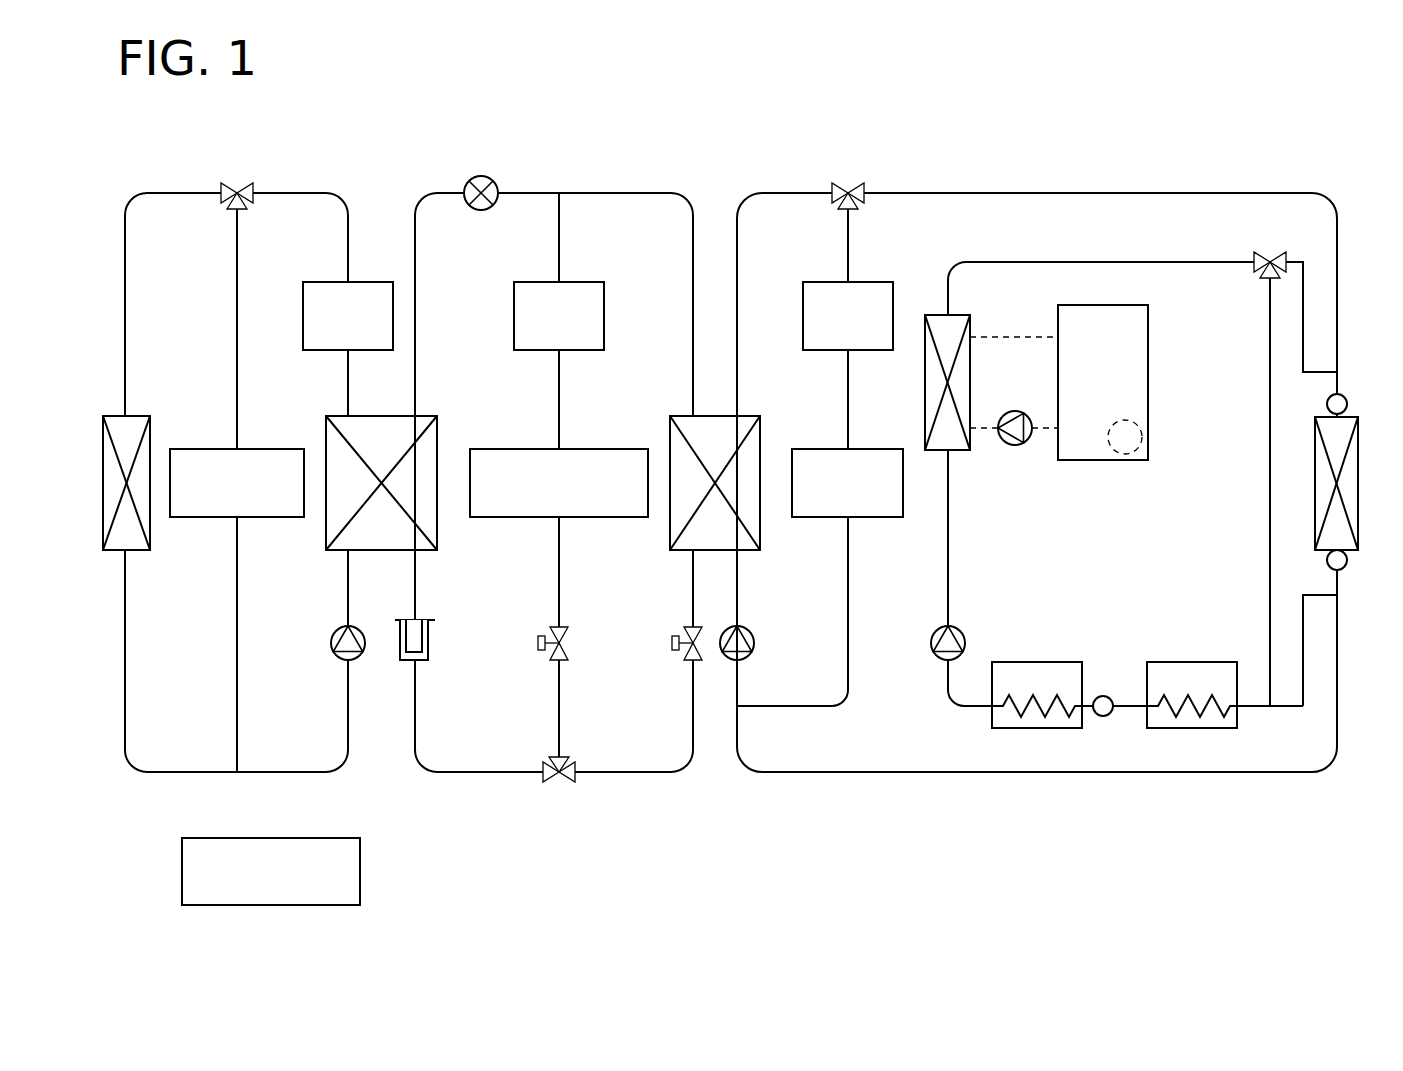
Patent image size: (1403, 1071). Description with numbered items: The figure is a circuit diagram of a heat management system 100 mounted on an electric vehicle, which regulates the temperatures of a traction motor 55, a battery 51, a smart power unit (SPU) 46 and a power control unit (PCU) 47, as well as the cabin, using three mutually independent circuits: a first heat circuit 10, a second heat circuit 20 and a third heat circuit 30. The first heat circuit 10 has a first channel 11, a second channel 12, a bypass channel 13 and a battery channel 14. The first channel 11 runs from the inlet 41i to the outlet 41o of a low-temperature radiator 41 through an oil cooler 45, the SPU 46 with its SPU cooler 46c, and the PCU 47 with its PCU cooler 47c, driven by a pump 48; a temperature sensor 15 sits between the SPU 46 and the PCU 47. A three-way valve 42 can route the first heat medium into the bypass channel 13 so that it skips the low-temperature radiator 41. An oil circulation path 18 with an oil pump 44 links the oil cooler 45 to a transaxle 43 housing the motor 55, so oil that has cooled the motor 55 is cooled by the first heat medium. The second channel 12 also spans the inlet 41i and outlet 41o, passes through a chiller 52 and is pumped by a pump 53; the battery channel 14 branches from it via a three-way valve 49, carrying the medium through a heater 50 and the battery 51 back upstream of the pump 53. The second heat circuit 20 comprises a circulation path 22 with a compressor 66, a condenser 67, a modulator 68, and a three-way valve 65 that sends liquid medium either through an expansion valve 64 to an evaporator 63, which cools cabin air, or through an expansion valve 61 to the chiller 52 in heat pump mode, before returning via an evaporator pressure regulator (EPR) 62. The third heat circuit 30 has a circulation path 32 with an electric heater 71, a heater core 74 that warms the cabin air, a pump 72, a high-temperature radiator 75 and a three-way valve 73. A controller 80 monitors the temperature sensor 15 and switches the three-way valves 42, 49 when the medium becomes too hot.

The heat management system 100 is at (158, 165).
The first heat circuit 10 is at (1114, 175).
The first channel 11 is at (946, 563).
The second channel 12 is at (952, 190).
The bypass channel 13 is at (1268, 416).
The battery channel 14 is at (852, 398).
The temperature sensor 15 is at (1103, 718).
The oil circulation path 18 is at (1003, 335).
The second heat circuit 20 is at (584, 182).
The circulation path 22 is at (701, 238).
The third heat circuit 30 is at (284, 182).
The circulation path 32 is at (353, 238).
The low-temperature radiator 41 is at (1312, 472).
The inlet 41i is at (1345, 395).
The outlet 41o is at (1345, 572).
The three-way valve 42 is at (1266, 252).
The transaxle 43 is at (1103, 463).
The oil pump 44 is at (1017, 448).
The oil cooler 45 is at (935, 312).
The smart power unit (SPU) 46 is at (1208, 708).
The SPU cooler 46c is at (1188, 710).
The power control unit (PCU) 47 is at (1040, 708).
The PCU cooler 47c is at (1030, 710).
The pump 48 is at (930, 645).
The three-way valve 49 is at (844, 182).
The heater 50 is at (871, 279).
The battery 51 is at (814, 446).
The chiller 52 is at (725, 553).
The pump 53 is at (755, 645).
The motor 55 is at (1140, 428).
The expansion valve 61 is at (680, 636).
The evaporator pressure regulator (EPR) 62 is at (539, 279).
The evaporator 63 is at (516, 446).
The expansion valve 64 is at (568, 648).
The three-way valve 65 is at (554, 785).
The compressor 66 is at (481, 175).
The condenser 67 is at (393, 553).
The modulator 68 is at (430, 638).
The electric heater 71 is at (327, 279).
The pump 72 is at (330, 643).
The three-way valve 73 is at (232, 182).
The heater core 74 is at (216, 446).
The high-temperature radiator 75 is at (138, 412).
The controller 80 is at (360, 873).